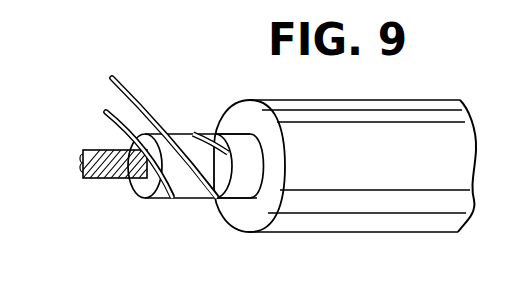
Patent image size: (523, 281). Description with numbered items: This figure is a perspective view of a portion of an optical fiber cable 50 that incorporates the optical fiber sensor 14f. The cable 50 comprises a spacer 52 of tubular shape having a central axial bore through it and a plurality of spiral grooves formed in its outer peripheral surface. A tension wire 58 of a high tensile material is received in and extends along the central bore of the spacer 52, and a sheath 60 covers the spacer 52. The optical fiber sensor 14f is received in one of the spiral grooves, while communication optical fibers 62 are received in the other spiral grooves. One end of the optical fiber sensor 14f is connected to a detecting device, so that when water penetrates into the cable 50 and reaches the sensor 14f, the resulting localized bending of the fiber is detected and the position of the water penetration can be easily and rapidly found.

The optical fiber cable 50 is at (388, 96).
The sheath 60 is at (243, 217).
The spacer 52 is at (141, 186).
The tension wire 58 is at (91, 184).
The optical fiber sensor 14f is at (105, 113).
The communication optical fibers 62 is at (197, 133).